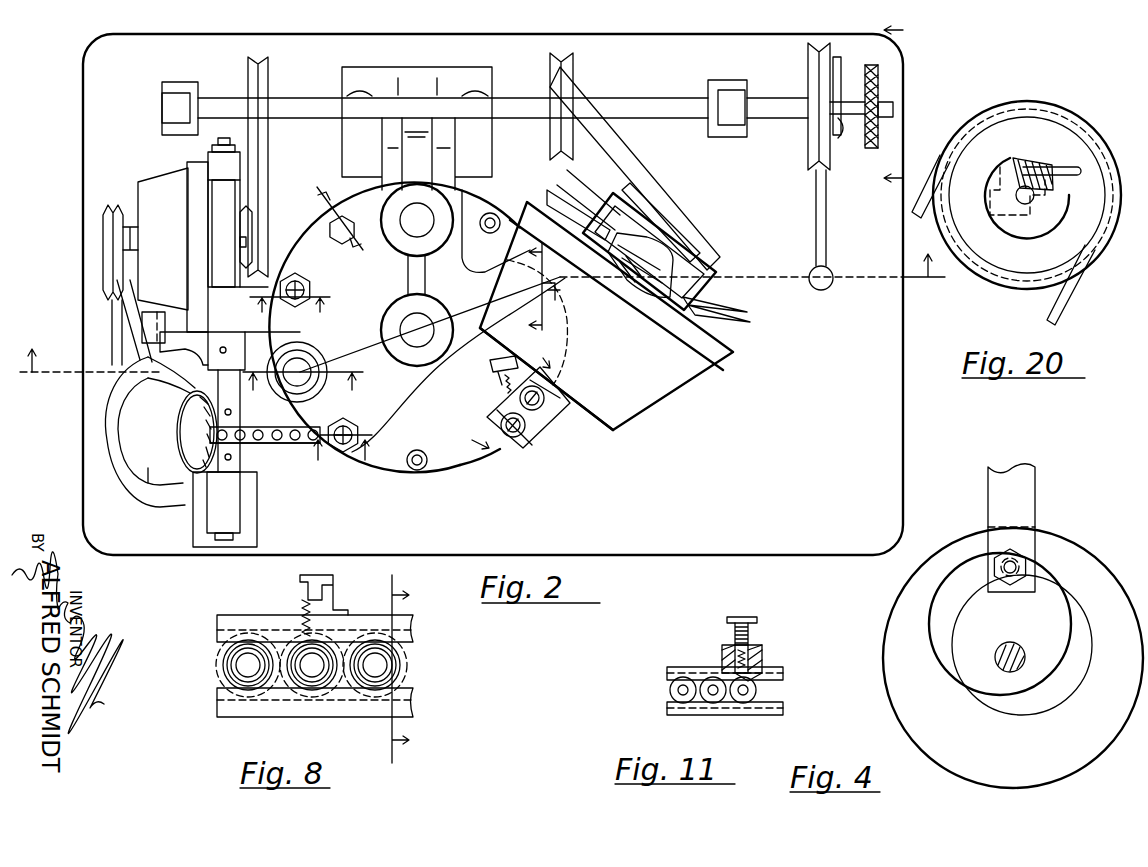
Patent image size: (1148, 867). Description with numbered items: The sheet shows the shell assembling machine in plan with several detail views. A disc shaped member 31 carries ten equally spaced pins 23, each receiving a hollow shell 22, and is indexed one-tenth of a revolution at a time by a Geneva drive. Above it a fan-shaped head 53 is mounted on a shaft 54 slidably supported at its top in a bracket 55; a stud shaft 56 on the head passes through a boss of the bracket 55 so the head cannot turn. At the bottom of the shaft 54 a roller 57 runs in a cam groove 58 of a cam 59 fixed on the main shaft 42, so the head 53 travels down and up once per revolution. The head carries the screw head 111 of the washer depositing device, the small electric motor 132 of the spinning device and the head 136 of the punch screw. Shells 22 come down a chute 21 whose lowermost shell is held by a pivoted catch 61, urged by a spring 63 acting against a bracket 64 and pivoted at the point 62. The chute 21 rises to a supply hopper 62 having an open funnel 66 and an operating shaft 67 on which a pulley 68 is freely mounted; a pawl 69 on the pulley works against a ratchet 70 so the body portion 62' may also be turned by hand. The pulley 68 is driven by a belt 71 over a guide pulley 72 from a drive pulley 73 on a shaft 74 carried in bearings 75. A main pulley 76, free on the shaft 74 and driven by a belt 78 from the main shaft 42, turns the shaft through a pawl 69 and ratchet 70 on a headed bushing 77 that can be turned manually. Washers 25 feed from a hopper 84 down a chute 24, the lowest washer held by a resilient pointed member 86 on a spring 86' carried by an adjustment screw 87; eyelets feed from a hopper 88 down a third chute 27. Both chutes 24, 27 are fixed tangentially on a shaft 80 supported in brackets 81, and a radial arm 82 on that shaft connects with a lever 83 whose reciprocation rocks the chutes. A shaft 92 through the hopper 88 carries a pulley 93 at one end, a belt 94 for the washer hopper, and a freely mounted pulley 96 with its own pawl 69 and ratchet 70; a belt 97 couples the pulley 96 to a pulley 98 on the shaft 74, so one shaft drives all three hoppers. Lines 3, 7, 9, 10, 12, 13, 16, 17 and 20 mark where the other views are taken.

In FIG. 2, the shaft 74 is at (620, 108).
In FIG. 2, the bearings 75 is at (173, 103).
In FIG. 2, the pulley 98 is at (268, 78).
In FIG. 2, the hopper 88 is at (170, 190).
In FIG. 2, the brackets 81 is at (247, 172).
In FIG. 2, the belt 97 is at (255, 188).
In FIG. 2, the pulley 96 is at (262, 218).
In FIG. 2, the ratchet 70 is at (246, 222).
In FIG. 20, the ratchet 70 is at (1054, 183).
In FIG. 2, the pawl 69 is at (246, 252).
In FIG. 20, the pawl 69 is at (1040, 178).
In FIG. 2, the shaft 92 is at (133, 235).
In FIG. 2, the pulley 93 is at (105, 232).
In FIG. 2, the belt 94 is at (116, 303).
In FIG. 2, the lever 83 is at (150, 320).
In FIG. 2, the radial arm 82 is at (177, 342).
In FIG. 2, the hopper 84 is at (160, 465).
In FIG. 2, the shaft 80 is at (220, 540).
In FIG. 2, the washers 25 is at (257, 430).
In FIG. 11, the washers 25 is at (693, 700).
In FIG. 2, the chute 24 is at (294, 448).
In FIG. 11, the chute 24 is at (676, 708).
In FIG. 2, the section line 10 is at (346, 458).
In FIG. 2, the screw head 111 is at (300, 284).
In FIG. 2, the section line 13 is at (290, 313).
In FIG. 2, the third chute 27 is at (268, 324).
In FIG. 2, the small electric motor 132 is at (300, 371).
In FIG. 2, the section line 12 is at (303, 373).
In FIG. 2, the section line 3 is at (482, 328).
In FIG. 2, the screw head 136 is at (345, 228).
In FIG. 2, the section line 16 is at (336, 218).
In FIG. 2, the head 53 is at (412, 390).
In FIG. 2, the disc shaped member 31 is at (396, 470).
In FIG. 2, the section line 17 is at (537, 309).
In FIG. 2, the stud shaft 56 is at (414, 226).
In FIG. 2, the bracket 55 is at (396, 324).
In FIG. 2, the shaft 54 is at (420, 340).
In FIG. 4, the shaft 54 is at (1022, 500).
In FIG. 2, the pin 23 is at (492, 220).
In FIG. 2, the drive pulley 73 is at (552, 135).
In FIG. 2, the belt 71 is at (625, 165).
In FIG. 2, the guide pulley 72 is at (665, 196).
In FIG. 2, the open funnel 66 is at (700, 272).
In FIG. 2, the operating shaft 67 is at (628, 282).
In FIG. 20, the operating shaft 67 is at (1032, 192).
In FIG. 2, the pulley 68 is at (740, 305).
In FIG. 20, the pulley 68 is at (1062, 140).
In FIG. 2, the supply hopper 62 is at (606, 316).
In FIG. 8, the supply hopper 62 is at (276, 614).
In FIG. 2, the body portion 62' is at (569, 398).
In FIG. 2, the bracket 64 is at (492, 366).
In FIG. 8, the bracket 64 is at (330, 578).
In FIG. 2, the spring 63 is at (506, 380).
In FIG. 8, the spring 63 is at (300, 600).
In FIG. 2, the section line 7 is at (505, 396).
In FIG. 2, the chute 21 is at (542, 432).
In FIG. 8, the chute 21 is at (240, 710).
In FIG. 2, the hollow shells 22 is at (542, 404).
In FIG. 8, the hollow shells 22 is at (222, 666).
In FIG. 2, the belt 78 is at (826, 212).
In FIG. 20, the belt 78 is at (1062, 300).
In FIG. 2, the main pulley 76 is at (828, 48).
In FIG. 2, the headed bushing 77 is at (874, 80).
In FIG. 2, the view line 20 is at (907, 104).
In FIG. 20, the view line 20 is at (927, 186).
In FIG. 4, the cam 59 is at (1096, 732).
In FIG. 4, the cam groove 58 is at (1080, 625).
In FIG. 4, the main shaft 42 is at (1018, 655).
In FIG. 4, the roller 57 is at (1030, 562).
In FIG. 8, the pivoted catch 61 is at (250, 635).
In FIG. 8, the section line 9 is at (388, 669).
In FIG. 11, the spring 86' is at (766, 658).
In FIG. 11, the adjustment screw 87 is at (750, 640).
In FIG. 11, the resilient pointed member 86 is at (771, 686).